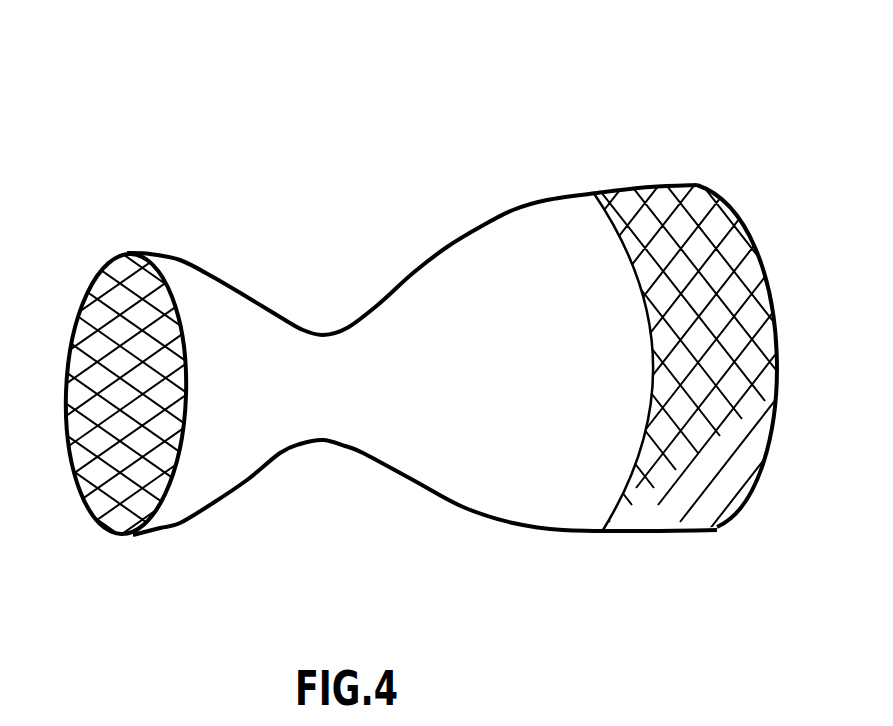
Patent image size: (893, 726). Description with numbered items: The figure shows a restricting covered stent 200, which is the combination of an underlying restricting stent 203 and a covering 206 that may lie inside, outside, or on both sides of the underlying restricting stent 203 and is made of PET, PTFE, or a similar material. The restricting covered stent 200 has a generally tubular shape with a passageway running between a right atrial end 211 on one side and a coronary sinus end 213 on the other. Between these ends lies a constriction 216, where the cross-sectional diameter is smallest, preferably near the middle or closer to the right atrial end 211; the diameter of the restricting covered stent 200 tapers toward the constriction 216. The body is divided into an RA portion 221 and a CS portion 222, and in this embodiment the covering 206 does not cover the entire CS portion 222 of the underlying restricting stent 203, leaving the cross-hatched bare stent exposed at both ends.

The restricting covered stent 200 is at (661, 96).
The underlying restricting stent 203 is at (115, 362).
The covering 206 is at (482, 248).
The right atrial end 211 is at (82, 488).
The coronary sinus end 213 is at (743, 228).
The constriction 216 is at (365, 465).
The RA portion 221 is at (278, 567).
The CS portion 222 is at (720, 553).